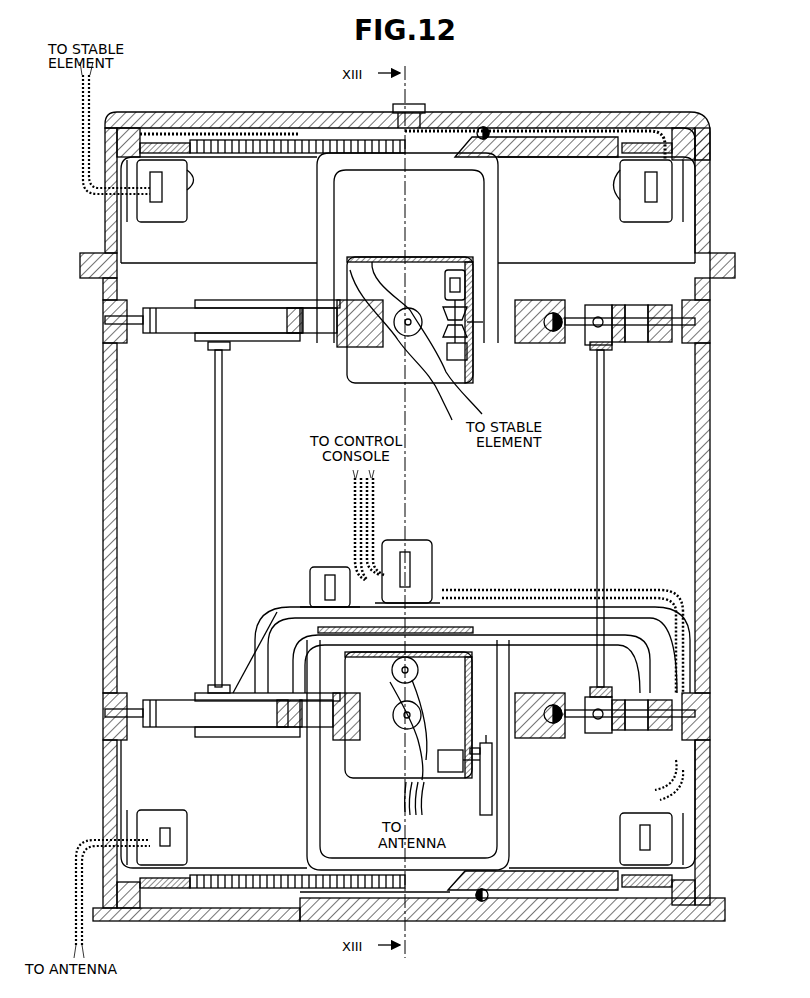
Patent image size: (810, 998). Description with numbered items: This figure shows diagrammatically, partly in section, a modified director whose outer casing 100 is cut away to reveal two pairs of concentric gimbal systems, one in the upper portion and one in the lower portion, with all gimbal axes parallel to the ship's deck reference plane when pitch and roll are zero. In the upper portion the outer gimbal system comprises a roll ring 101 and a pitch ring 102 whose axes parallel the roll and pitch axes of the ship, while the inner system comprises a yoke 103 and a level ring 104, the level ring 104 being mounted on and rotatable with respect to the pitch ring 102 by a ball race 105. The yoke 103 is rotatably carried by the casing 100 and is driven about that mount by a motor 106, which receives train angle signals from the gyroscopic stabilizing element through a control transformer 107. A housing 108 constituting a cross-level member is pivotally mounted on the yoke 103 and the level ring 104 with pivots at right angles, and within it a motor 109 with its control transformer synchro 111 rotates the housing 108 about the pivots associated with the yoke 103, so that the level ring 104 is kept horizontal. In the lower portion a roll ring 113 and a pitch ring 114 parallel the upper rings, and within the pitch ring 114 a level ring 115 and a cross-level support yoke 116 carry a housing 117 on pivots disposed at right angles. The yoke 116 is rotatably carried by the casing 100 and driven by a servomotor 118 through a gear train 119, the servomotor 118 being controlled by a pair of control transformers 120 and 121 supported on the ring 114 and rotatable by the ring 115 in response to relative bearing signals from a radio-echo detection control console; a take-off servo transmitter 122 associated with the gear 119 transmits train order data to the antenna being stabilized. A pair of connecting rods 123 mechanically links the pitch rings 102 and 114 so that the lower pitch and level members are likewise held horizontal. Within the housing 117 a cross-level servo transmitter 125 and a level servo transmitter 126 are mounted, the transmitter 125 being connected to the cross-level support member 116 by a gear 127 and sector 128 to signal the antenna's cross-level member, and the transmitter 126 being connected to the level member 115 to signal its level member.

The outer casing 100 is at (712, 532).
The roll ring 101 is at (662, 305).
The pitch ring 102 is at (598, 305).
The yoke 103 is at (490, 221).
The level ring 104 is at (535, 303).
The ball race 105 is at (555, 331).
The motor 106 is at (620, 200).
The control transformer 107 is at (185, 195).
The housing 108 is at (434, 384).
The motor 109 is at (450, 268).
The control transformer synchro 111 is at (470, 357).
The roll ring 113 is at (660, 735).
The pitch ring 114 is at (608, 735).
The level ring 115 is at (548, 742).
The cross-level support yoke 116 is at (310, 805).
The housing 117 is at (405, 788).
The servomotor 118 is at (622, 843).
The gear train 119 is at (258, 876).
The control transformer 120 is at (312, 580).
The control transformer 121 is at (433, 548).
The take-off servo transmitter 122 is at (187, 813).
The connecting rods 123 is at (215, 440).
The cross-level servo transmitter 125 is at (458, 737).
The level servo transmitter 126 is at (418, 668).
The gear 127 is at (492, 750).
The sector 128 is at (478, 782).